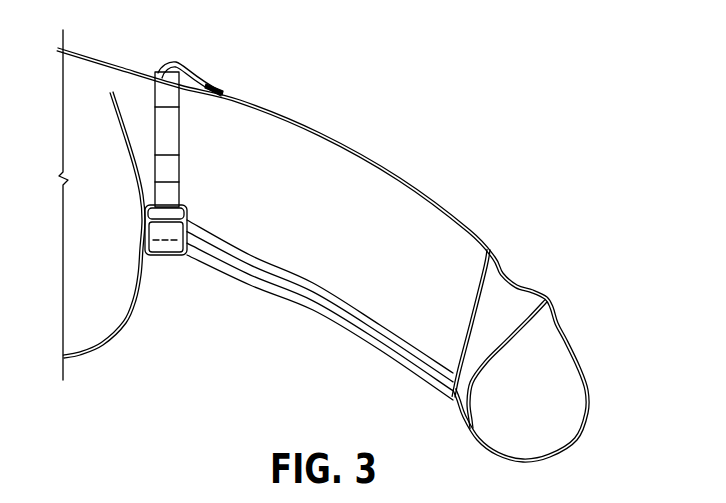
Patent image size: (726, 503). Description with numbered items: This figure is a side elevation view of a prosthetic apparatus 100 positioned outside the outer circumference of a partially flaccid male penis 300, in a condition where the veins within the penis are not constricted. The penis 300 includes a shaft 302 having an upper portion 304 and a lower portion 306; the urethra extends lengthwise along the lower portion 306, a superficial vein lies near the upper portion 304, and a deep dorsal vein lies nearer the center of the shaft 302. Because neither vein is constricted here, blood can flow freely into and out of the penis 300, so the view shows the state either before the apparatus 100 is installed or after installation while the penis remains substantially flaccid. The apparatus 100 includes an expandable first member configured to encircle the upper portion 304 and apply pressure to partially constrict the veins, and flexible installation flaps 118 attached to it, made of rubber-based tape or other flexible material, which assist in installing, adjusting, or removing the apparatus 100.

The apparatus 100 is at (209, 202).
The flexible installation flaps 118 is at (208, 85).
The penis 300 is at (323, 255).
The shaft 302 is at (457, 250).
The upper portion 304 is at (320, 133).
The lower portion 306 is at (353, 332).